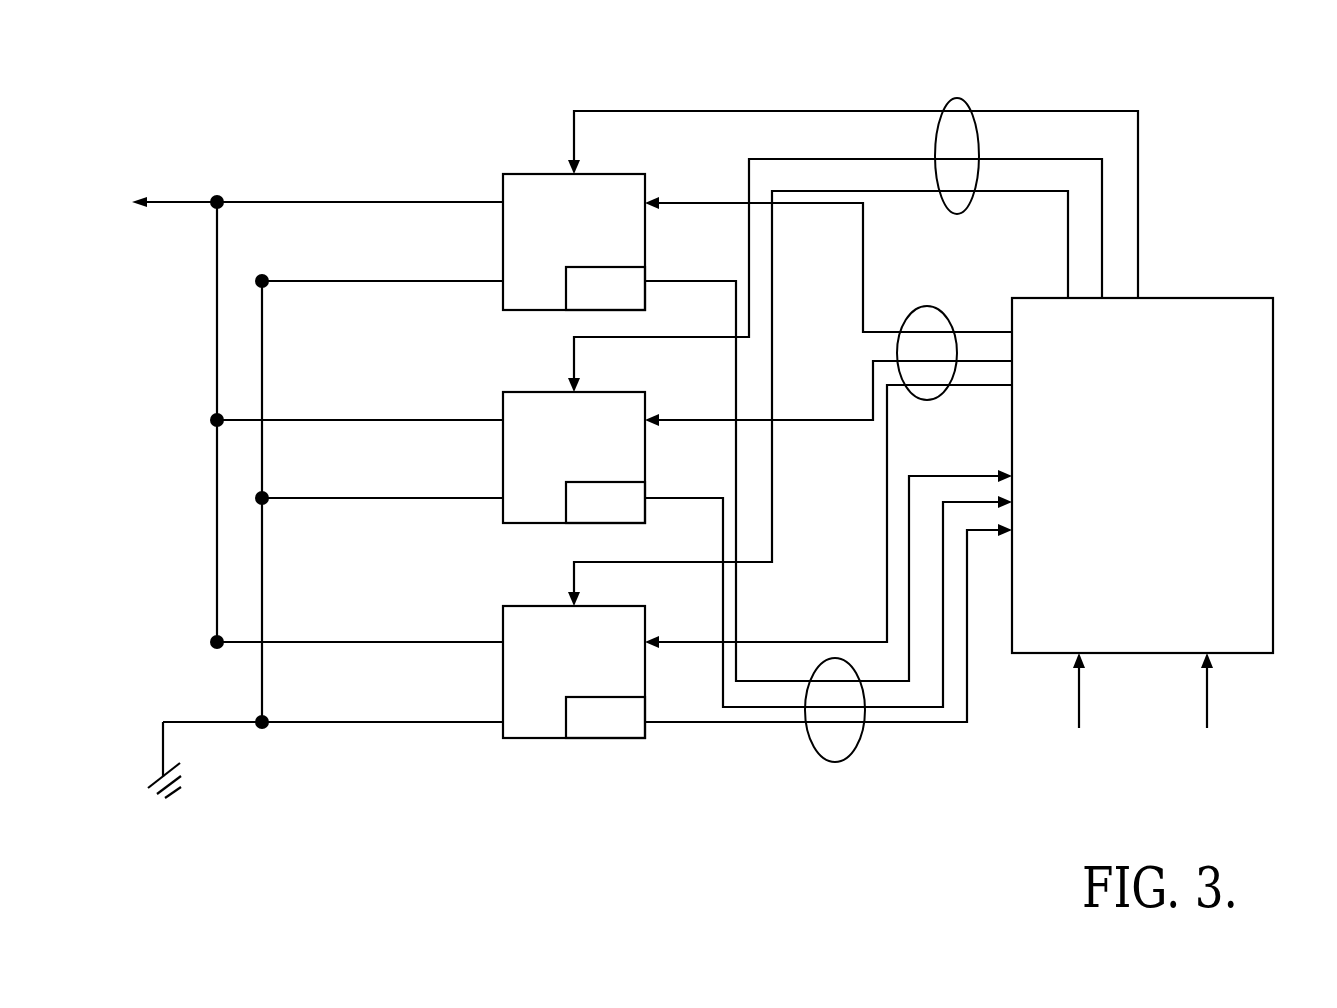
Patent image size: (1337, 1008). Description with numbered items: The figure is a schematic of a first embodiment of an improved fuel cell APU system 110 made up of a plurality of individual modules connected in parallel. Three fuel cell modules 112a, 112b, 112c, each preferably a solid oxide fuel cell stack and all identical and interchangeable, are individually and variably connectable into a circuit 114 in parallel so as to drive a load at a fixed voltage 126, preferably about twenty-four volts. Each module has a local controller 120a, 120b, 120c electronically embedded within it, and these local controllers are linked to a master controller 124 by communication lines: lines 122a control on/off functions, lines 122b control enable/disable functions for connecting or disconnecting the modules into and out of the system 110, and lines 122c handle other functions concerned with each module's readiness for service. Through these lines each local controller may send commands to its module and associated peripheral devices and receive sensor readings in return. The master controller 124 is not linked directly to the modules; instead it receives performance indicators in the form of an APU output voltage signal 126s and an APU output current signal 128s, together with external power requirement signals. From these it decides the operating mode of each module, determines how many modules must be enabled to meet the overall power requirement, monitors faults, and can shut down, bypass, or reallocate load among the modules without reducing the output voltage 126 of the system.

The fuel cell APU system 110 is at (1196, 140).
The fuel cell module 112a is at (605, 253).
The fuel cell module 112b is at (605, 470).
The fuel cell module 112c is at (605, 684).
The circuit 114 is at (216, 334).
The local controller 120a is at (636, 303).
The local controller 120b is at (636, 518).
The local controller 120c is at (636, 733).
The communication lines 122a is at (958, 98).
The communication lines 122b is at (928, 306).
The communication lines 122c is at (852, 754).
The master controller 124 is at (1164, 491).
The fixed voltage 126 is at (147, 202).
The APU output voltage signal 126s is at (1208, 697).
The APU output current signal 128s is at (1080, 697).